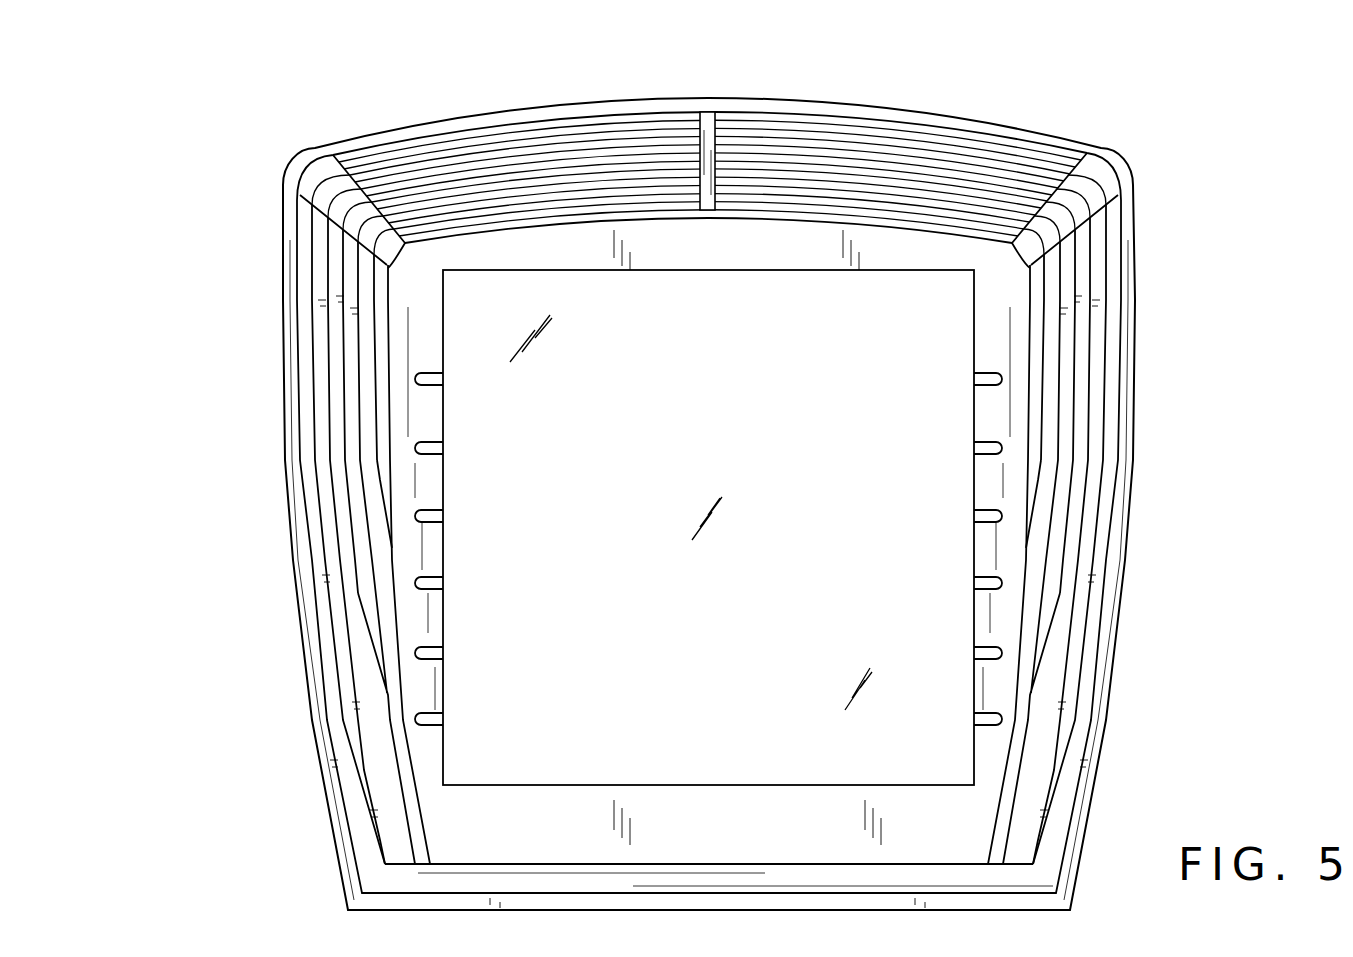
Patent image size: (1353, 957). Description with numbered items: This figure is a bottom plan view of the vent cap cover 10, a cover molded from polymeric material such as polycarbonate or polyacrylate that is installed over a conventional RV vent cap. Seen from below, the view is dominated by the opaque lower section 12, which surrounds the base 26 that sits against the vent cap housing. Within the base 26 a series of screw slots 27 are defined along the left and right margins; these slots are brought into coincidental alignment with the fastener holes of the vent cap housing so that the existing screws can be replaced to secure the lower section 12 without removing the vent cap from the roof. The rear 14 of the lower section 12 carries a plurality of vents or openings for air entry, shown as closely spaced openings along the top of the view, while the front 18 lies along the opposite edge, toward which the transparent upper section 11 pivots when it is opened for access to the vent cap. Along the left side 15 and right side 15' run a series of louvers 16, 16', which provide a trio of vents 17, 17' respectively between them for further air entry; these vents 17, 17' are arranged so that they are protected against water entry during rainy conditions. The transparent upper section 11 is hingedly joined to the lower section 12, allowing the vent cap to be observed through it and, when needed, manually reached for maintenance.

The vent cap cover 10 is at (1216, 108).
The transparent upper section 11 is at (710, 436).
The opaque lower section 12 is at (437, 108).
The rear 14 is at (540, 140).
The left side 15 is at (299, 570).
The right side 15' is at (1128, 570).
The louvers 16 is at (317, 519).
The louvers 16' is at (1109, 519).
The vents 17 is at (327, 432).
The vents 17' is at (1106, 637).
The front 18 is at (645, 897).
The base 26 is at (688, 824).
The screw slots 27 is at (447, 442).